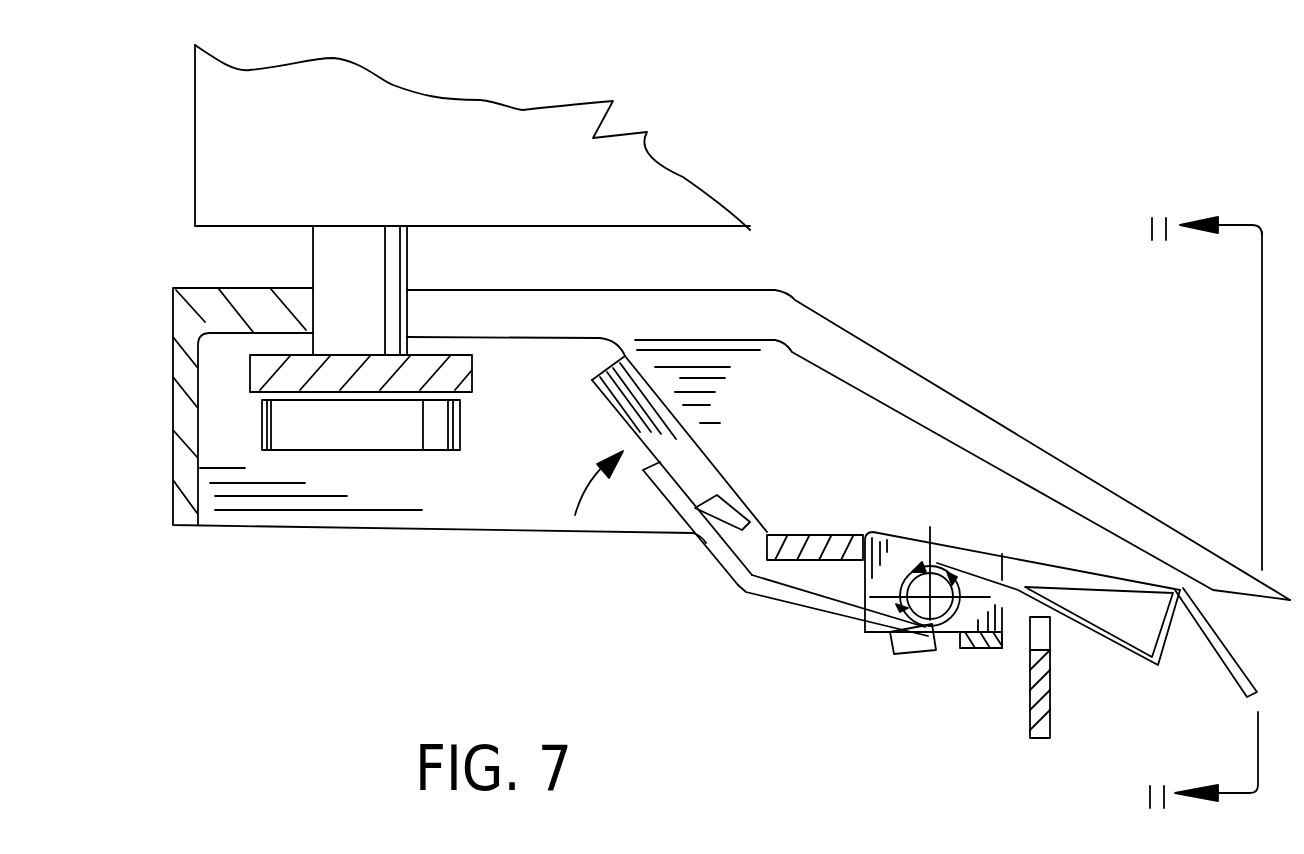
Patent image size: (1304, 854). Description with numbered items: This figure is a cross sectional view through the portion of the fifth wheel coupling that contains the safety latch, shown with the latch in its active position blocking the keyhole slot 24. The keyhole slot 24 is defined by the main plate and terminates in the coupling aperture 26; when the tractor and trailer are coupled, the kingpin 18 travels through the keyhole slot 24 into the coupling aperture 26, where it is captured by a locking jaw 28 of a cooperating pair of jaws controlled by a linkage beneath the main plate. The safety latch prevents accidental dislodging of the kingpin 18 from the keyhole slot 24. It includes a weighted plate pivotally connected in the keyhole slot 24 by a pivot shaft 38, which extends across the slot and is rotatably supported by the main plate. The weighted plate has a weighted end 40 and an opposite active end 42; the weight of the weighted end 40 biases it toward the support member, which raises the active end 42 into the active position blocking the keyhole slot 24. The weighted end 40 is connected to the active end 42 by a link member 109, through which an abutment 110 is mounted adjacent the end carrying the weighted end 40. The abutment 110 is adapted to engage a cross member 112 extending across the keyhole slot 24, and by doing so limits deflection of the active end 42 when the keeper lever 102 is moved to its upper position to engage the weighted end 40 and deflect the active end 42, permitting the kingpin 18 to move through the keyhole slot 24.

The kingpin 18 is at (370, 276).
The keyhole slot 24 is at (980, 418).
The coupling aperture 26 is at (320, 306).
The locking jaw 28 is at (440, 368).
The pivot shaft 38 is at (933, 590).
The weighted end 40 is at (1158, 665).
The active end 42 is at (683, 462).
The keeper lever 102 is at (1050, 685).
The link member 109 is at (800, 596).
The abutment 110 is at (908, 645).
The cross member 112 is at (977, 648).